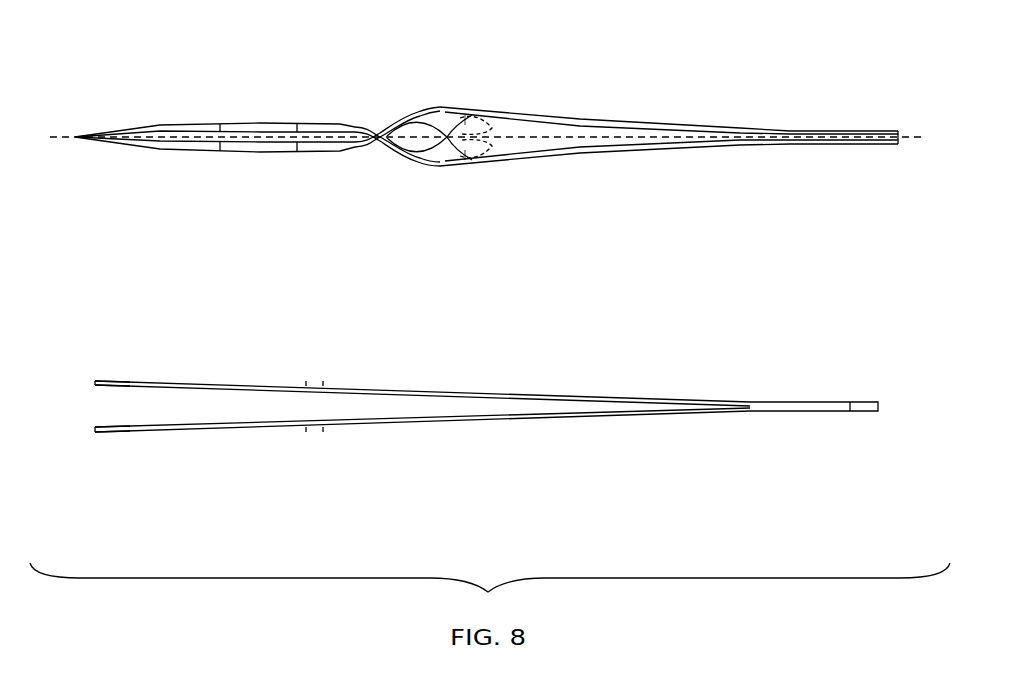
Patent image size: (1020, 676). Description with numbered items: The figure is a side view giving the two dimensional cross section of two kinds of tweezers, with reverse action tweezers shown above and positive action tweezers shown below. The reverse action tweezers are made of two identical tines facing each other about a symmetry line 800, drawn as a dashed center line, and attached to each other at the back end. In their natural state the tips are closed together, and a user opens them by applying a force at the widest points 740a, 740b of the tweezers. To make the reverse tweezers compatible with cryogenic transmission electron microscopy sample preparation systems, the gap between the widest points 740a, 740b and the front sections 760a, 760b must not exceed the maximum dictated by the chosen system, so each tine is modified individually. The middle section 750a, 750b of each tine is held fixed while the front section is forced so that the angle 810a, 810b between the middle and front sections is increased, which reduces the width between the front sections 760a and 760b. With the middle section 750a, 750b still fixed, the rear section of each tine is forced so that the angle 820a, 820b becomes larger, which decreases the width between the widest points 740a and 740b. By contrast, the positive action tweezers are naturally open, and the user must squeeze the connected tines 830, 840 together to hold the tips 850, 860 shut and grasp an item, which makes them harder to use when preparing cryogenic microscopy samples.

The symmetry line 800 is at (486, 136).
The widest point of the tweezers 740a is at (440, 110).
The widest point of the tweezers 740b is at (441, 165).
The middle section of the tine 750a is at (393, 121).
The middle section of the tine 750b is at (387, 152).
The front section of the tine 760a is at (345, 125).
The front section of the tine 760b is at (345, 150).
The angle between the middle and front sections 810a is at (341, 146).
The angle between the middle and front sections 810b is at (345, 131).
The angle between the middle and rear sections 820a is at (494, 172).
The angle between the middle and rear sections 820b is at (494, 112).
The connected tine 830 is at (421, 381).
The connected tine 840 is at (424, 432).
The tip of the tweezers 850 is at (95, 380).
The tip of the tweezers 860 is at (95, 433).